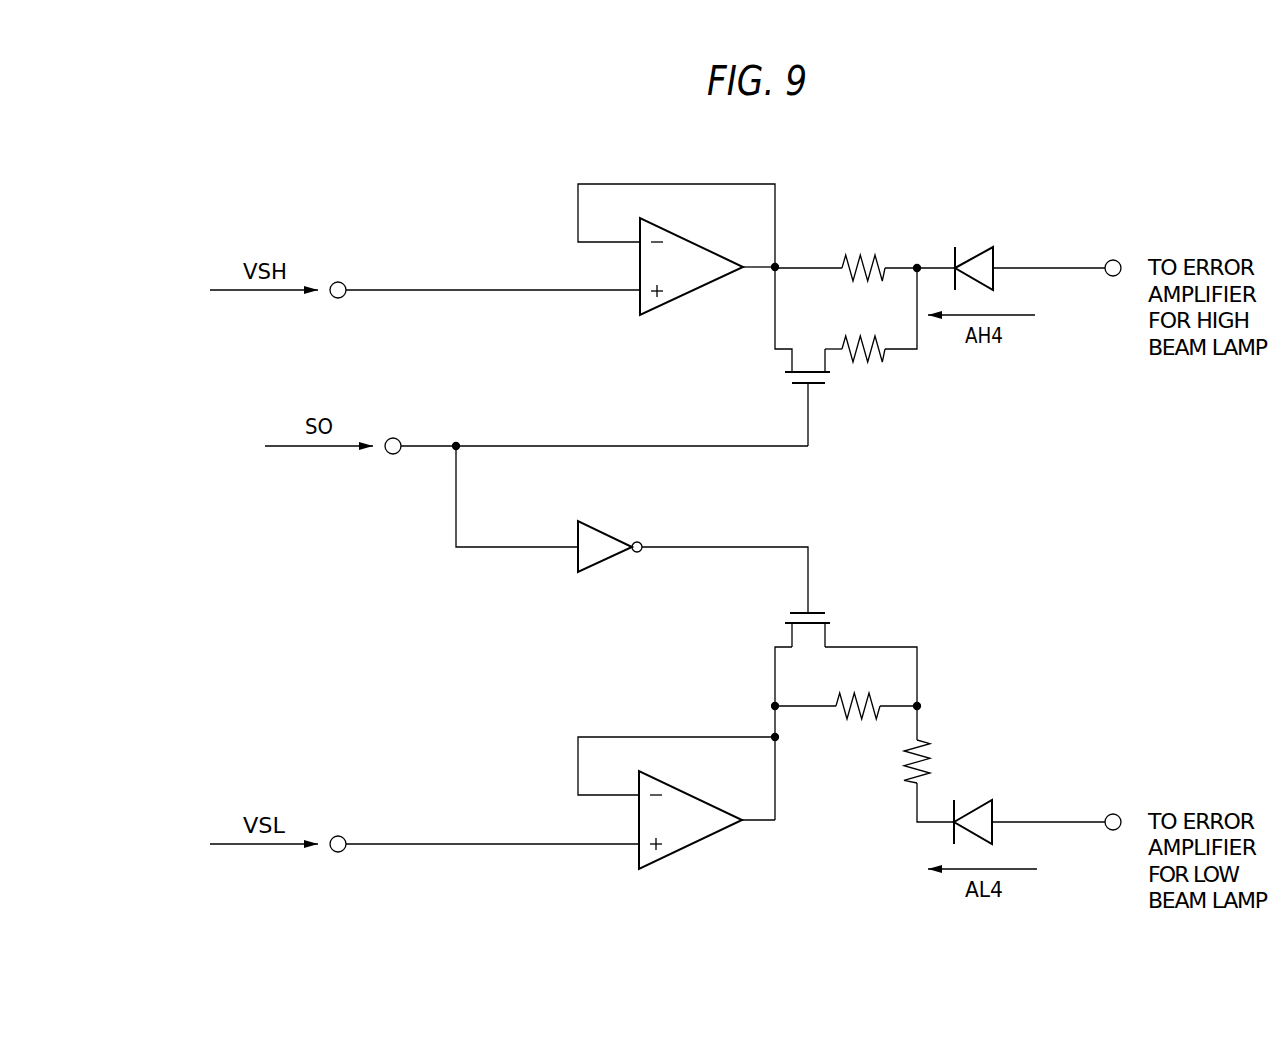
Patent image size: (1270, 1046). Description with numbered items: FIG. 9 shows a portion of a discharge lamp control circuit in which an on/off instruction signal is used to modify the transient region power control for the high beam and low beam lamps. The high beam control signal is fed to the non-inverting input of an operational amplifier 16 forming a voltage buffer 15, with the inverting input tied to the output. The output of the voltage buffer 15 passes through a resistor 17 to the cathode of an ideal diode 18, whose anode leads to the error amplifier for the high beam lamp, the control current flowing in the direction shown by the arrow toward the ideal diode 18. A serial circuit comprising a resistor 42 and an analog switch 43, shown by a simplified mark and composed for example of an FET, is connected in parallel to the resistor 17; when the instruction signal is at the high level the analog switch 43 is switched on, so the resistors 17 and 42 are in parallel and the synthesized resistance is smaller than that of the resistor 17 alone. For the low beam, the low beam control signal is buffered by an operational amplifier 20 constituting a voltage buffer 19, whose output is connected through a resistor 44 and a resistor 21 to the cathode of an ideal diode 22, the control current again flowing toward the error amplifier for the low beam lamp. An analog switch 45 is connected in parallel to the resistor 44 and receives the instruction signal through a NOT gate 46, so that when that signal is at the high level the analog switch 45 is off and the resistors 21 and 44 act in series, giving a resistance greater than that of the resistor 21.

The voltage buffer 15 is at (597, 321).
The operational amplifier 16 is at (692, 238).
The resistor 17 is at (875, 258).
The ideal diode 18 is at (976, 250).
The voltage buffer 19 is at (560, 789).
The operational amplifier 20 is at (692, 794).
The resistor 21 is at (927, 757).
The ideal diode 22 is at (978, 804).
The resistor 42 is at (874, 340).
The analog switch 43 is at (836, 392).
The resistor 44 is at (868, 697).
The analog switch 45 is at (836, 608).
The NOT gate 46 is at (604, 530).